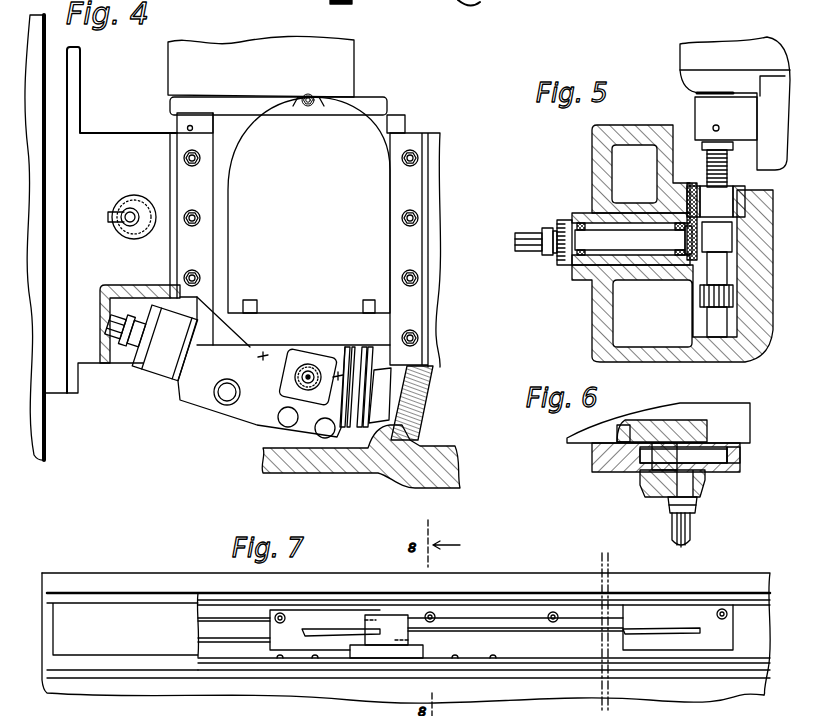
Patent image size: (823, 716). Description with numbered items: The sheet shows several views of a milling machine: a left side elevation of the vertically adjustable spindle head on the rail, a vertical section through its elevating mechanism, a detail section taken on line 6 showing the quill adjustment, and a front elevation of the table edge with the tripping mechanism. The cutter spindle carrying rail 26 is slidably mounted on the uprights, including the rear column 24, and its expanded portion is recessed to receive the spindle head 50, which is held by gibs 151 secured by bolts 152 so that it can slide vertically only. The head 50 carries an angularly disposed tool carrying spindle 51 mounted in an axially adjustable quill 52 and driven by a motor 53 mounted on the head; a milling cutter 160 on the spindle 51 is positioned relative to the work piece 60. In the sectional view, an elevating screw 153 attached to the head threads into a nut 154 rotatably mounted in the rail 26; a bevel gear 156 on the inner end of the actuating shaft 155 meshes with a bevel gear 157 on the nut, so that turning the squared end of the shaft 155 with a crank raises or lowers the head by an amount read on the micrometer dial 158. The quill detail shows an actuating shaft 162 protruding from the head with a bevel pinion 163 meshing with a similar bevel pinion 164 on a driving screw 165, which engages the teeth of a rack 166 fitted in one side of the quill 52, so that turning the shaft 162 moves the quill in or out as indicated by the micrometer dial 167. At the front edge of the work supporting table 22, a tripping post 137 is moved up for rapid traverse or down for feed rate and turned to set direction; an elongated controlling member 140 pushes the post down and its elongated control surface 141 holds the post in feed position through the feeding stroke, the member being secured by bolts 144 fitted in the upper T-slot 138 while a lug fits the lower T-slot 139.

In FIG. 4, the section line 6- 6 is at (298, 376).
In FIG. 7, the work supporting table 22 is at (173, 569).
In FIG. 4, the rear column 24 is at (47, 409).
In FIG. 4, the spindle carrying rail 26 is at (112, 147).
In FIG. 5, the spindle carrying rail 26 is at (600, 145).
In FIG. 4, the spindle head 50 is at (381, 95).
In FIG. 5, the spindle head 50 is at (702, 89).
In FIG. 6, the spindle head 50 is at (610, 470).
In FIG. 4, the tool carrying spindle 51 is at (387, 390).
In FIG. 4, the quill 52 is at (375, 363).
In FIG. 6, the quill 52 is at (702, 412).
In FIG. 4, the motor 53 is at (351, 73).
In FIG. 5, the motor 53 is at (692, 53).
In FIG. 4, the work piece 60 is at (441, 458).
In FIG. 7, the tripping post 137 is at (373, 630).
In FIG. 7, the upper T-slot 138 is at (213, 618).
In FIG. 7, the lower T-slot 139 is at (215, 639).
In FIG. 7, the controlling member 140 is at (436, 626).
In FIG. 7, the control surface 141 is at (490, 636).
In FIG. 7, the bolts 144 is at (282, 624).
In FIG. 4, the gibs 151 is at (207, 178).
In FIG. 4, the bolts 152 is at (197, 240).
In FIG. 5, the elevating screw 153 is at (703, 167).
In FIG. 5, the nut 154 is at (734, 195).
In FIG. 4, the actuating shaft 155 is at (115, 230).
In FIG. 5, the actuating shaft 155 is at (624, 237).
In FIG. 5, the bevel gear 156 is at (686, 240).
In FIG. 5, the bevel gear 157 is at (719, 257).
In FIG. 4, the micrometer dial 158 is at (141, 195).
In FIG. 5, the micrometer dial 158 is at (567, 220).
In FIG. 4, the milling cutter 160 is at (430, 397).
In FIG. 4, the actuating shaft 162 is at (302, 362).
In FIG. 6, the actuating shaft 162 is at (668, 503).
In FIG. 6, the bevel pinion 163 is at (706, 480).
In FIG. 6, the bevel pinion 164 is at (683, 437).
In FIG. 6, the driving screw 165 is at (657, 483).
In FIG. 6, the rack 166 is at (621, 431).
In FIG. 4, the micrometer dial 167 is at (314, 366).
In FIG. 6, the micrometer dial 167 is at (698, 505).